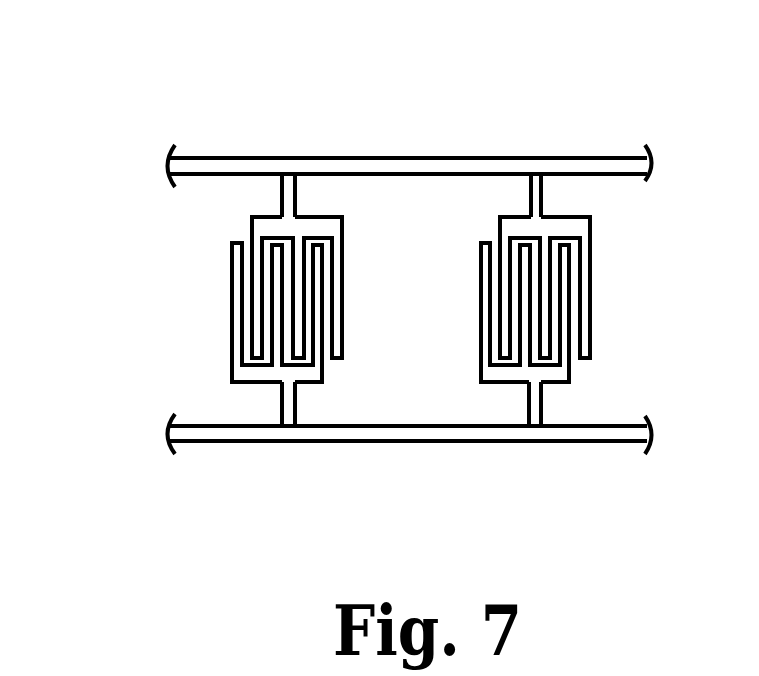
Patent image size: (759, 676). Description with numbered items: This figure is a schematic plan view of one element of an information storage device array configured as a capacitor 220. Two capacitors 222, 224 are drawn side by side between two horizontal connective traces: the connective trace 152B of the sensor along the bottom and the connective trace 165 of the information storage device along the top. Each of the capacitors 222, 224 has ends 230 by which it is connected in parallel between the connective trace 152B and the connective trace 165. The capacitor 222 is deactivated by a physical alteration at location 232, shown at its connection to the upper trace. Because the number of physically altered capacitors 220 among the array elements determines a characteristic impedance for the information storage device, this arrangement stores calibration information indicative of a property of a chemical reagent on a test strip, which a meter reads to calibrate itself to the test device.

The capacitor 220 is at (373, 135).
The connective trace of information storage device 165 is at (477, 158).
The connective trace of sensor 152B is at (473, 447).
The capacitor 222 is at (232, 301).
The capacitor 224 is at (593, 283).
The ends 230 is at (296, 196).
The location of physical alteration 232 is at (280, 191).